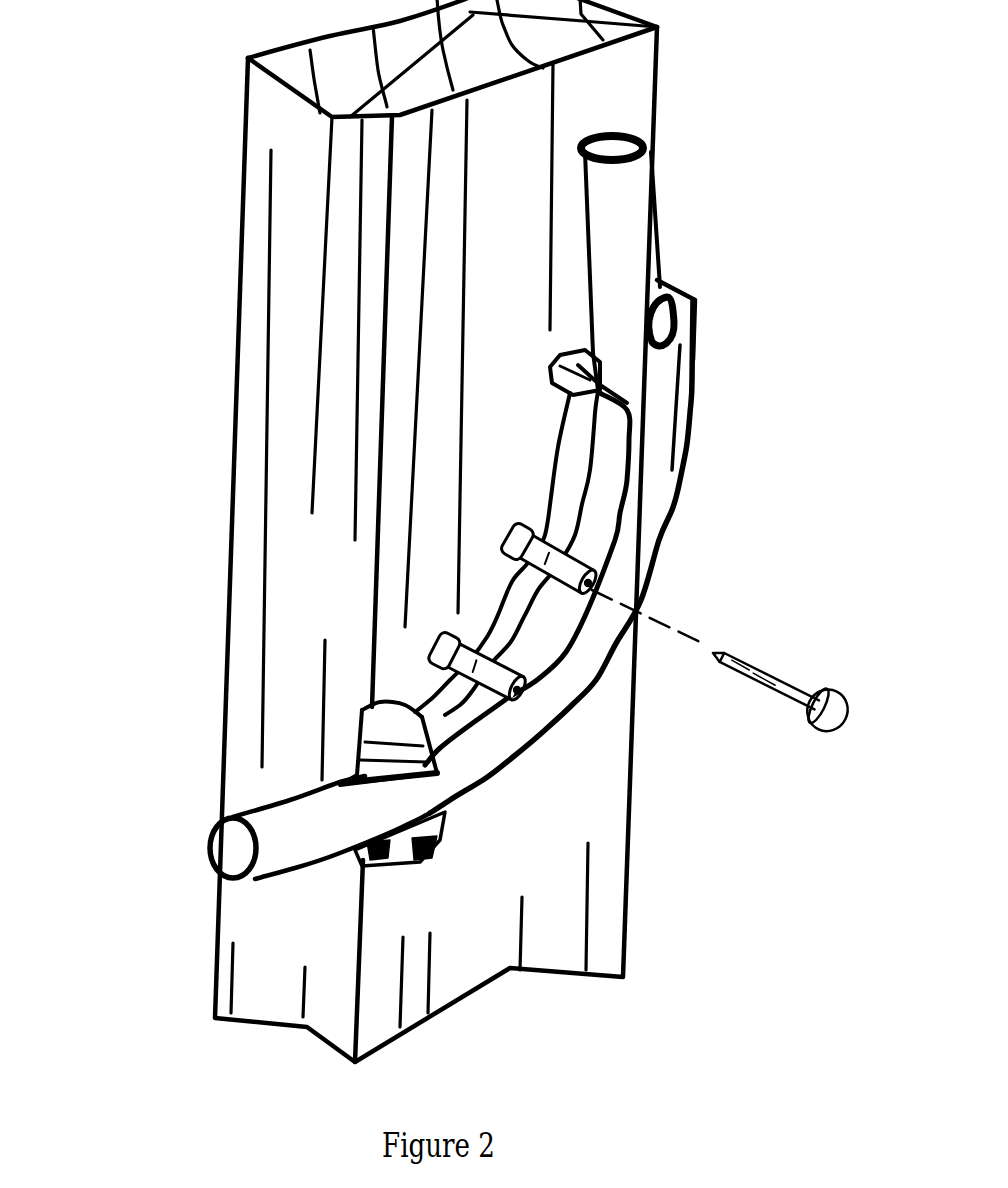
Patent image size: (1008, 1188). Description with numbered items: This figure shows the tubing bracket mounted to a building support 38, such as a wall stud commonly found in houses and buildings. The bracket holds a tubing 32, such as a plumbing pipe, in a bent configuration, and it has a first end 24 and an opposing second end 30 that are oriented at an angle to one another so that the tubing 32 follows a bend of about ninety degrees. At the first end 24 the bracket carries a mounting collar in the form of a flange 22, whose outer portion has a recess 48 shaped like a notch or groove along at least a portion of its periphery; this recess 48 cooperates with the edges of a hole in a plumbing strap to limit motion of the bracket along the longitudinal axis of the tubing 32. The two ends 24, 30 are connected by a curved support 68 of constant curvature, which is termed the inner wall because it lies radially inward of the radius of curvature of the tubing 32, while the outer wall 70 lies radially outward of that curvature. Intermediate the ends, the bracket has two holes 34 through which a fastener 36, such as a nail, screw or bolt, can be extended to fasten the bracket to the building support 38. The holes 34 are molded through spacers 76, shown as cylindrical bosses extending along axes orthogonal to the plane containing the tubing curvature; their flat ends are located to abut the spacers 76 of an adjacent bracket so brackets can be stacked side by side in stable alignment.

The flange 22 is at (273, 695).
The first end 24 is at (412, 872).
The second end 30 is at (707, 320).
The tubing 32 is at (265, 880).
The holes 34 is at (605, 573).
The fastener 36 is at (803, 690).
The building support 38 is at (623, 78).
The recess 48 is at (390, 705).
The curved support 68 is at (610, 437).
The outer wall 70 is at (697, 407).
The spacers 76 is at (560, 550).